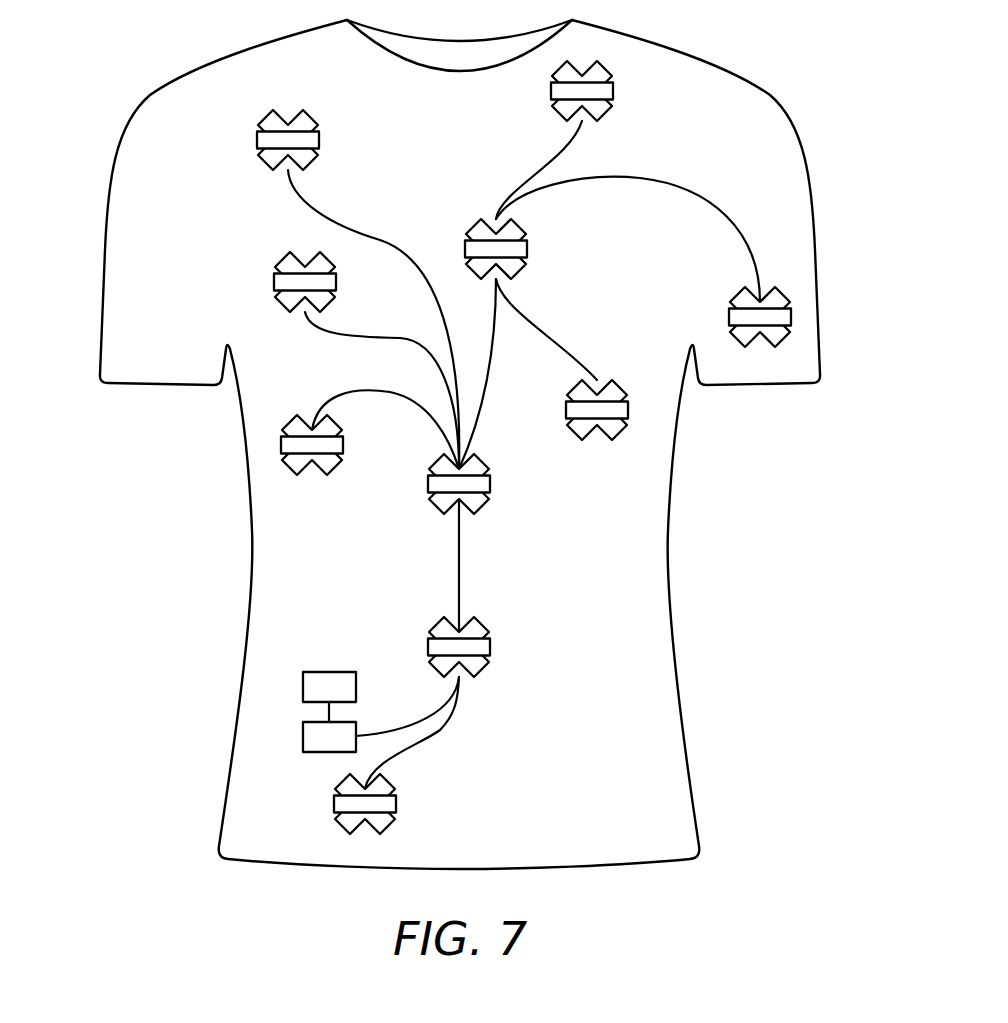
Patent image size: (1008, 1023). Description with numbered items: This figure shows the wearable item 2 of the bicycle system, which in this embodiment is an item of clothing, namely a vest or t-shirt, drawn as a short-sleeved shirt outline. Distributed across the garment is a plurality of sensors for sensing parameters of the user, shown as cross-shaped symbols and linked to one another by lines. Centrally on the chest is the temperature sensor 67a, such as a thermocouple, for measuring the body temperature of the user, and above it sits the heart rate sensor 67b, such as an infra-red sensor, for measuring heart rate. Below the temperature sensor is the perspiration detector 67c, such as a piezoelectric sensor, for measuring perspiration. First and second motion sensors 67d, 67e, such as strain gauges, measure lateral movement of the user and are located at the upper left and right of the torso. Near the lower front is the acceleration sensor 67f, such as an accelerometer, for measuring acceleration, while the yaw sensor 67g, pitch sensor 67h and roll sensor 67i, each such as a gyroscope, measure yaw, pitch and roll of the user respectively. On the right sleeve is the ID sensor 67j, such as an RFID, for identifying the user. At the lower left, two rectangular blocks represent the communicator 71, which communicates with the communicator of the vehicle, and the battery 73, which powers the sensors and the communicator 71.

The wearable item 2 is at (94, 78).
The temperature sensor 67a is at (498, 490).
The heart rate sensor 67b is at (536, 247).
The perspiration detector 67c is at (498, 652).
The first motion sensor 67d is at (326, 138).
The second motion sensor 67e is at (595, 379).
The acceleration sensor 67f is at (404, 807).
The yaw sensor 67g is at (273, 444).
The pitch sensor 67h is at (624, 95).
The roll sensor 67i is at (268, 283).
The ID sensor 67j is at (799, 310).
The communicator 71 is at (303, 740).
The battery 73 is at (303, 690).